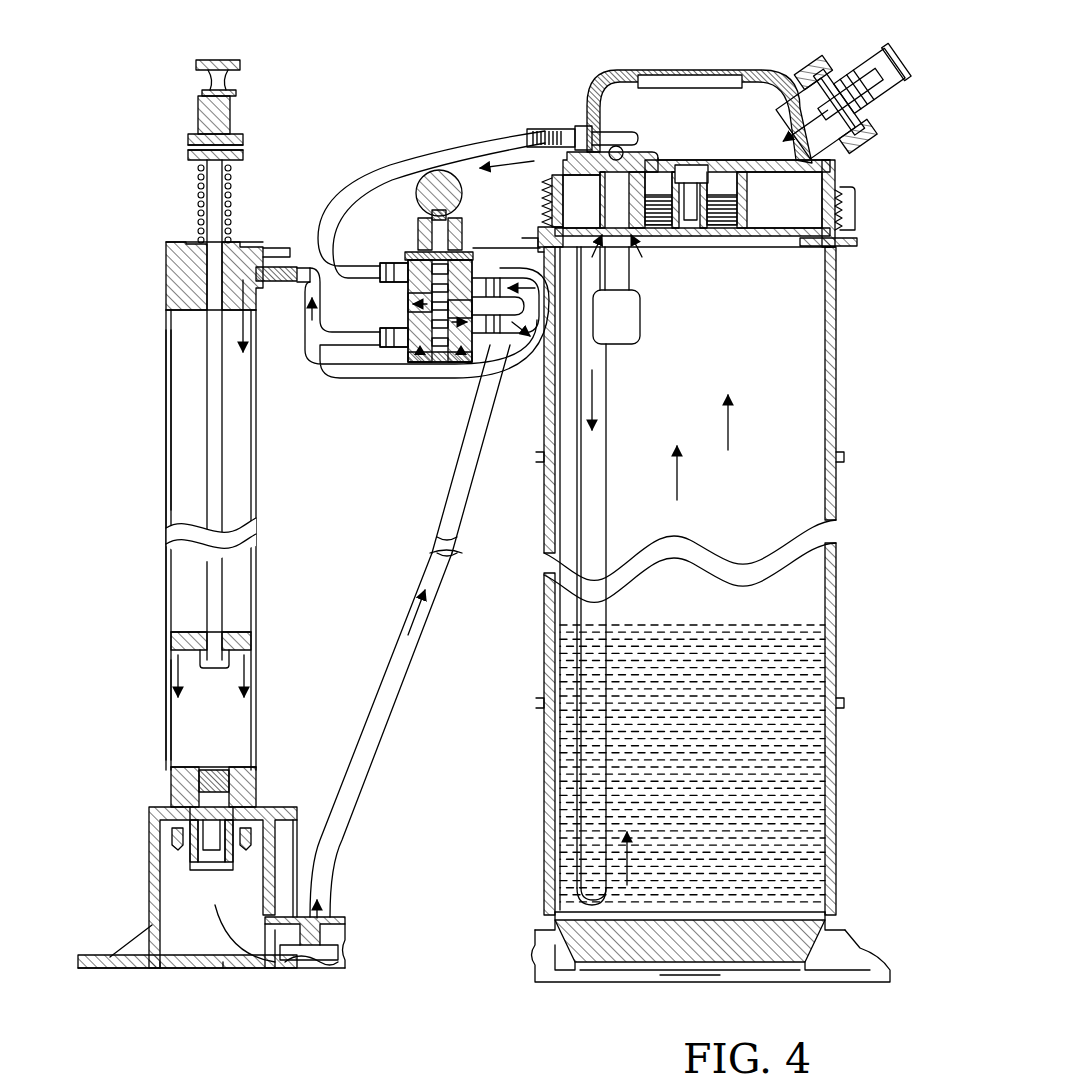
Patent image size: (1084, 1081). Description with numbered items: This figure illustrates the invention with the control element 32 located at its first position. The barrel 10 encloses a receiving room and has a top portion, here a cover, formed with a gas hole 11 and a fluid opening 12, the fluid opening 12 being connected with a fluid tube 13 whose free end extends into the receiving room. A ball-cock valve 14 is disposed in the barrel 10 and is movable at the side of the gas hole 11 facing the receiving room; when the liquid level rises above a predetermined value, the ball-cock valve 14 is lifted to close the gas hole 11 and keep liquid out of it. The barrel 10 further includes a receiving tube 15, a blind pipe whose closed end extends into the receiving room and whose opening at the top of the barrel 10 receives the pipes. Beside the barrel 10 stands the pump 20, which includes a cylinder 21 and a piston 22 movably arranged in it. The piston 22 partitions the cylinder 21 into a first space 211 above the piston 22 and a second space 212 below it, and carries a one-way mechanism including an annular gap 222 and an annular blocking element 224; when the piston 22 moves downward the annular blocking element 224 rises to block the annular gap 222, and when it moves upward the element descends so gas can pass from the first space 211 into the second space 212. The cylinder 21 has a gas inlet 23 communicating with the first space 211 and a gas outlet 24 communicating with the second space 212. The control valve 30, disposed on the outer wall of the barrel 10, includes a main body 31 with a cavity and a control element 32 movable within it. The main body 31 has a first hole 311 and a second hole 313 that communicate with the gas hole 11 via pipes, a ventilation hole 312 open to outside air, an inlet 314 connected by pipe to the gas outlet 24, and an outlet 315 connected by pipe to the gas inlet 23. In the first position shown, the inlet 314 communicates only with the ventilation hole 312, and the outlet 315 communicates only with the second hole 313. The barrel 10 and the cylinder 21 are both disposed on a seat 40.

The barrel 10 is at (858, 484).
The gas hole 11 is at (618, 190).
The fluid opening 12 is at (582, 200).
The fluid tube 13 is at (590, 622).
The ball-cock valve 14 is at (630, 312).
The receiving tube 15 is at (563, 595).
The pump 20 is at (158, 600).
The cylinder 21 is at (168, 480).
The first space 211 is at (175, 385).
The second space 212 is at (190, 738).
The piston 22 is at (235, 632).
The annular gap 222 is at (165, 1078).
The annular blocking element 224 is at (208, 1078).
The gas inlet 23 is at (278, 275).
The gas outlet 24 is at (335, 945).
The control valve 30 is at (522, 40).
The main body 31 is at (470, 260).
The first hole 311 is at (405, 272).
The ventilation hole 312 is at (462, 292).
The second hole 313 is at (422, 338).
The inlet 314 is at (482, 300).
The outlet 315 is at (469, 338).
The control element 32 is at (436, 172).
The seat 40 is at (870, 975).